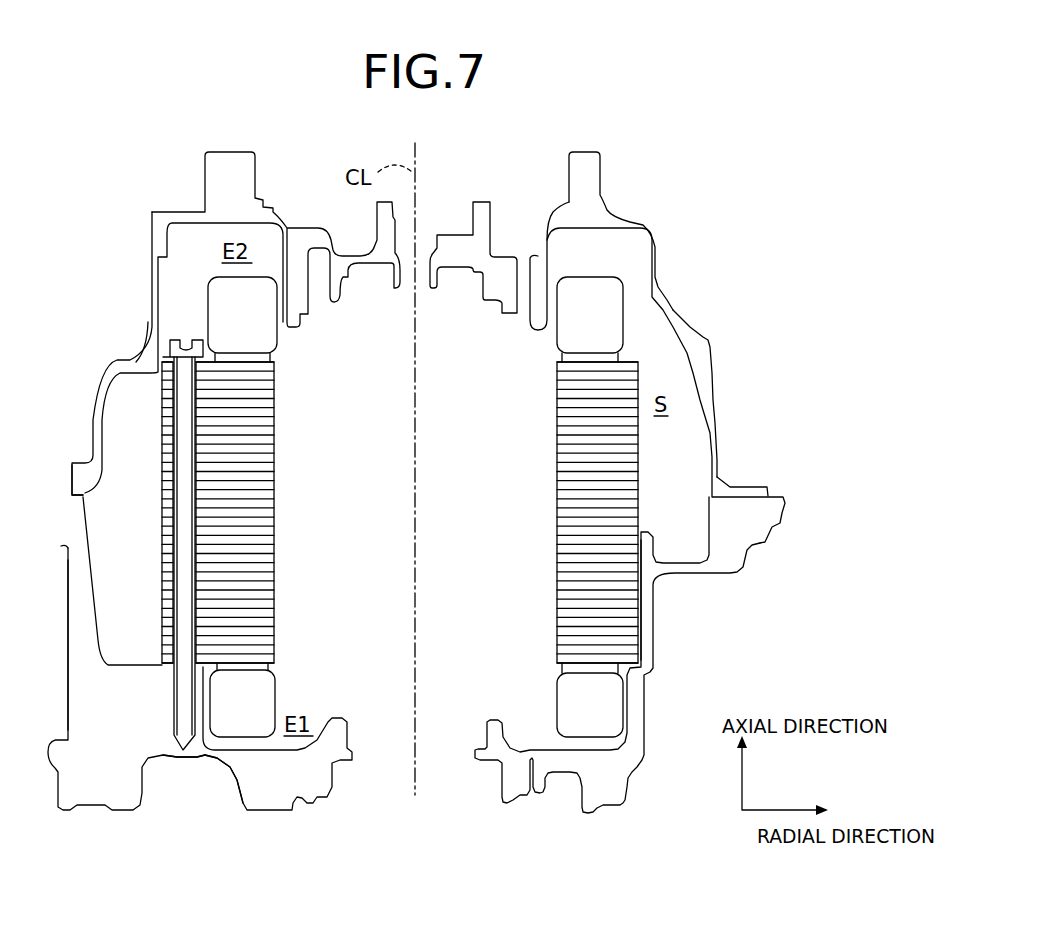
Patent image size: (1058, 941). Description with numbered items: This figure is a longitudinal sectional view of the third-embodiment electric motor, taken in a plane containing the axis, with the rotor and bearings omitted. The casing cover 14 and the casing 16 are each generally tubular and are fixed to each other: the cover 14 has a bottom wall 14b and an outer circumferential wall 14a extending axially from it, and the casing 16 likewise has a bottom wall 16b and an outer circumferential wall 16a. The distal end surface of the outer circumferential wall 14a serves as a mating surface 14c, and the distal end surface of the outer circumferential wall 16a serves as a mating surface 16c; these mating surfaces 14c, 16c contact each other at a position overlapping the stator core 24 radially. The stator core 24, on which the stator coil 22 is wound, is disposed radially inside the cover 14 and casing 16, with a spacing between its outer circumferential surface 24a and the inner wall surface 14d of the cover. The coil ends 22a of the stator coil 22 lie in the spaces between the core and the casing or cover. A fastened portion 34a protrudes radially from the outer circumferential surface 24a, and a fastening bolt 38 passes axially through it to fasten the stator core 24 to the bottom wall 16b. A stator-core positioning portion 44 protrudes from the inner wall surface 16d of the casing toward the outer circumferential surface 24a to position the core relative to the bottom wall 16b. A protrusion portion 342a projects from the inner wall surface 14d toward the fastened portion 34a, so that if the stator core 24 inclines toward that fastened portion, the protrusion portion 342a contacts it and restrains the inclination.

The casing cover 14 is at (405, 343).
The outer circumferential wall 14a is at (707, 389).
The bottom wall 14b is at (460, 243).
The mating surface 14c is at (718, 498).
The inner wall surface 14d is at (103, 397).
The casing 16 is at (389, 666).
The outer circumferential wall 16a is at (78, 634).
The bottom wall 16b is at (246, 772).
The mating surface 16c is at (77, 492).
The inner wall surface 16d is at (95, 621).
The stator coil 22 is at (440, 484).
The coil end 22a is at (612, 334).
The stator core 24 is at (402, 512).
The outer circumferential surface 24a is at (639, 479).
The fastened portion 34a is at (163, 501).
The fastening bolt 38 is at (175, 698).
The stator-core positioning portion 44 is at (623, 620).
The protrusion portion 342a is at (146, 362).